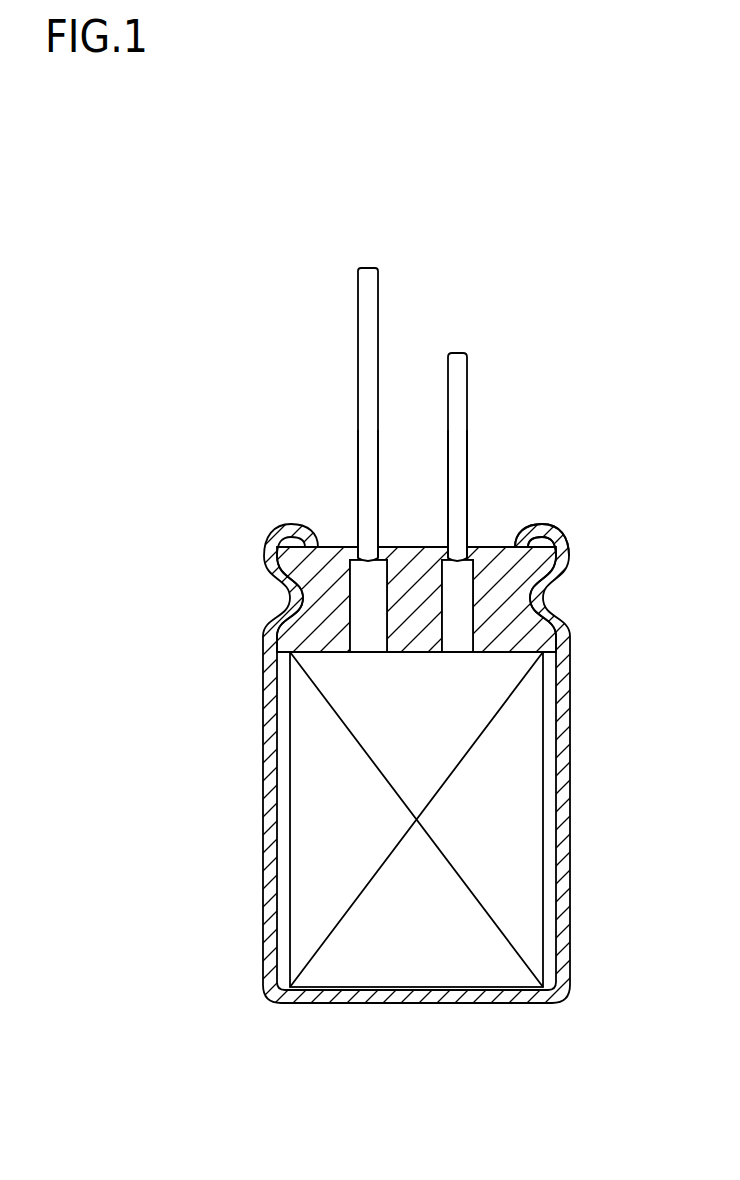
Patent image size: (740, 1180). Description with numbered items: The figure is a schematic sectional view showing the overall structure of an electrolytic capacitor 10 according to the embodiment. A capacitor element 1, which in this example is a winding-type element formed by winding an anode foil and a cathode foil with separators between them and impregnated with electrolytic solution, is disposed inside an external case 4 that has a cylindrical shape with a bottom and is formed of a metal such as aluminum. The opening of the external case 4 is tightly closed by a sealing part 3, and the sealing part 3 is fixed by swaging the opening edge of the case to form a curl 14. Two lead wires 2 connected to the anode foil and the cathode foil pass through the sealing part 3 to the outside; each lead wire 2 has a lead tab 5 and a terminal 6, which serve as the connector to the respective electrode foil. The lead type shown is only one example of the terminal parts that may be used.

The capacitor element 1 is at (530, 883).
The lead wires 2 is at (326, 262).
The sealing part 3 is at (545, 565).
The external case 4 is at (575, 693).
The lead tab 5 is at (365, 585).
The terminal 6 is at (367, 447).
The electrolytic capacitor 10 is at (198, 349).
The curl 14 is at (557, 527).